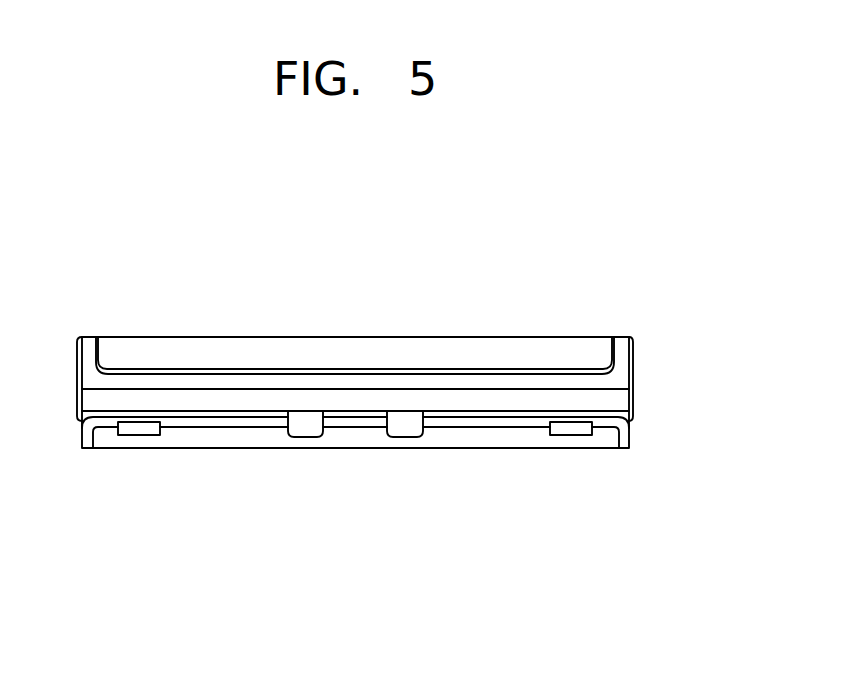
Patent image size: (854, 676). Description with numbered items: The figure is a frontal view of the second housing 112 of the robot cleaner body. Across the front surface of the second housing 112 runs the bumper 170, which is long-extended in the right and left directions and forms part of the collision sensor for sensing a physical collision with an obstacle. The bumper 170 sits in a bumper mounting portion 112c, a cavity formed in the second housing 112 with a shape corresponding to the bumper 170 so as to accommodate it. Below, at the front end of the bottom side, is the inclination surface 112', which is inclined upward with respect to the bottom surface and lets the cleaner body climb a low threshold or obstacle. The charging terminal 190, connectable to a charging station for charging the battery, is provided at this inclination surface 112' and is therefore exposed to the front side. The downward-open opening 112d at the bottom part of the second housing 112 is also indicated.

The second housing 112 is at (355, 358).
The bumper mounting portion 112c is at (492, 388).
The inclination surface 112' is at (355, 472).
The opening 112d is at (140, 428).
The bumper 170 is at (622, 401).
The charging terminal 190 is at (403, 427).